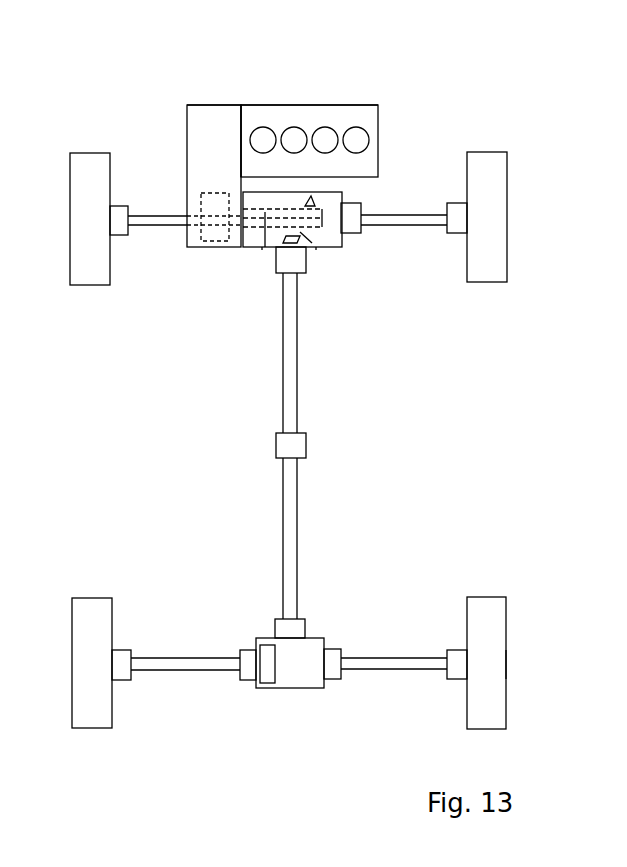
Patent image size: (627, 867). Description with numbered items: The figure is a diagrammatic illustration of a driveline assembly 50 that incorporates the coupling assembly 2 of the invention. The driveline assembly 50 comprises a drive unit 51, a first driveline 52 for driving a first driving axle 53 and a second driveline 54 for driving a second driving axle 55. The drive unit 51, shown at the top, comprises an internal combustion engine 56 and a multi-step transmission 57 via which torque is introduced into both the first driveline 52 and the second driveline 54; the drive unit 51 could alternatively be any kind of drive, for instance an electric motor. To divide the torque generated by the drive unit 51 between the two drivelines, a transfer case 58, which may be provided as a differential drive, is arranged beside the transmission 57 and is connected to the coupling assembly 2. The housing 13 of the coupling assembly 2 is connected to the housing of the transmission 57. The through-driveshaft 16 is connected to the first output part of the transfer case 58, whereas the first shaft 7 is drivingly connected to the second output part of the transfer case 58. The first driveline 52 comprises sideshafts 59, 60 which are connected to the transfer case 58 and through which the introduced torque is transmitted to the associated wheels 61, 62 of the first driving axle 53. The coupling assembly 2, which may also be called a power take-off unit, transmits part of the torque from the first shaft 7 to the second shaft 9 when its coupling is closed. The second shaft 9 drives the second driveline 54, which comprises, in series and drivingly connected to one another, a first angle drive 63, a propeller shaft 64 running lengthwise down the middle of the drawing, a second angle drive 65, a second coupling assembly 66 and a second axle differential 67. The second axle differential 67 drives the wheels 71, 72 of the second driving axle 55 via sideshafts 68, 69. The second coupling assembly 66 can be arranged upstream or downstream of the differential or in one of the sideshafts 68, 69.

The driveline assembly 50 is at (267, 56).
The drive unit 51 is at (285, 104).
The internal combustion engine 56 is at (350, 115).
The multi-step transmission 57 is at (200, 117).
The transfer case 58 is at (222, 243).
The first shaft 7 is at (265, 212).
The through-driveshaft 16 is at (322, 218).
The coupling assembly 2 is at (331, 263).
The housing 13 is at (262, 250).
The second shaft 9 is at (272, 250).
The first angle drive 63 is at (316, 250).
The sideshaft 59 is at (153, 215).
The sideshaft 60 is at (416, 215).
The wheel 61 is at (80, 242).
The wheel 62 is at (497, 182).
The first driveline 52 is at (173, 254).
The first driving axle 53 is at (527, 222).
The propeller shaft 64 is at (298, 385).
The second driveline 54 is at (360, 483).
The second angle drive 65 is at (308, 626).
The second coupling assembly 66 is at (265, 688).
The second axle differential 67 is at (306, 682).
The sideshaft 68 is at (186, 660).
The sideshaft 69 is at (396, 660).
The wheel 71 is at (72, 707).
The wheel 72 is at (498, 620).
The second driving axle 55 is at (528, 665).